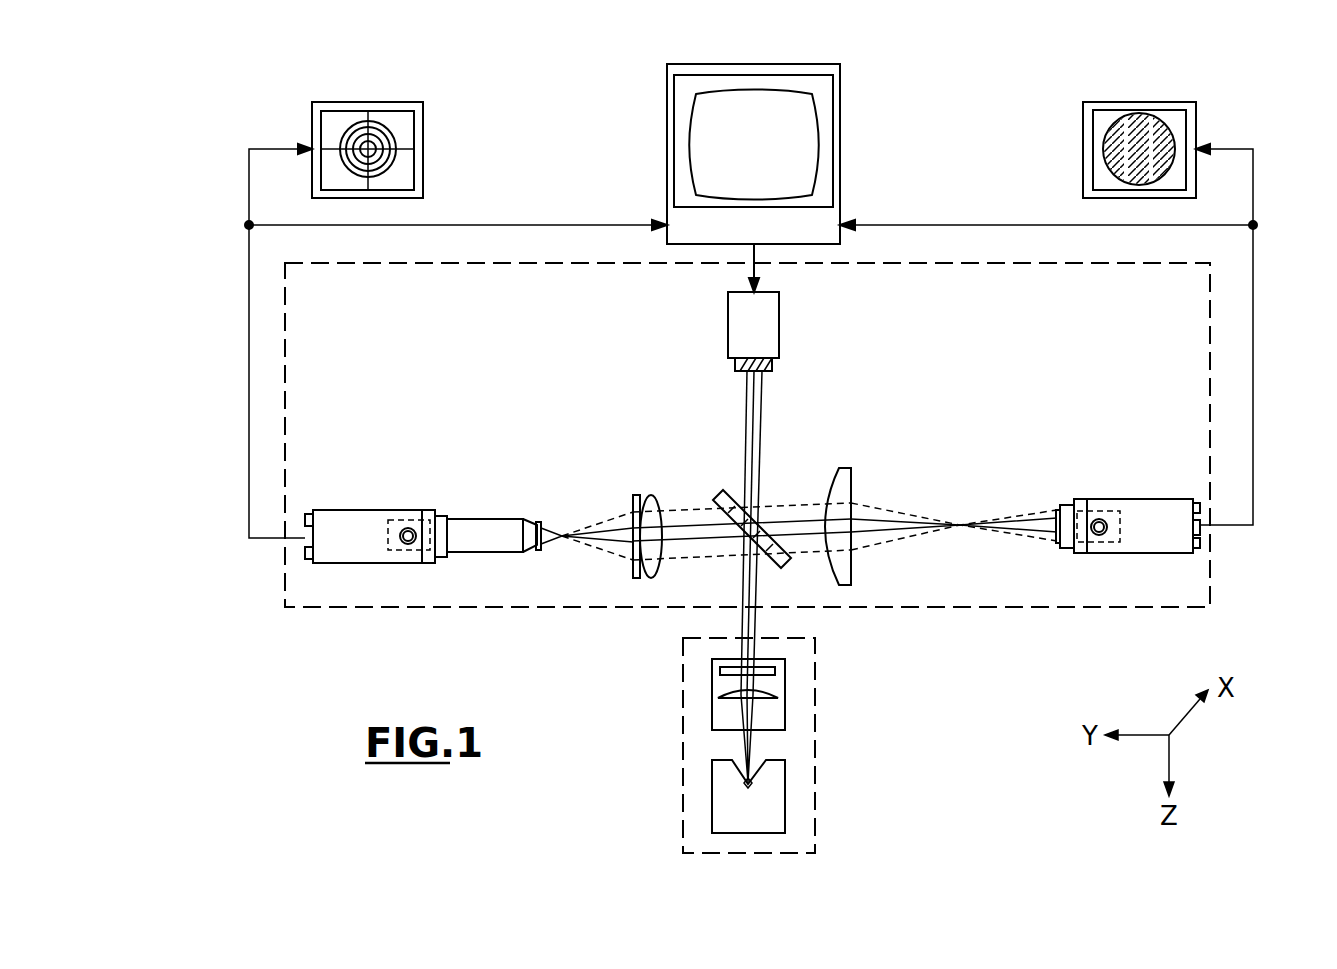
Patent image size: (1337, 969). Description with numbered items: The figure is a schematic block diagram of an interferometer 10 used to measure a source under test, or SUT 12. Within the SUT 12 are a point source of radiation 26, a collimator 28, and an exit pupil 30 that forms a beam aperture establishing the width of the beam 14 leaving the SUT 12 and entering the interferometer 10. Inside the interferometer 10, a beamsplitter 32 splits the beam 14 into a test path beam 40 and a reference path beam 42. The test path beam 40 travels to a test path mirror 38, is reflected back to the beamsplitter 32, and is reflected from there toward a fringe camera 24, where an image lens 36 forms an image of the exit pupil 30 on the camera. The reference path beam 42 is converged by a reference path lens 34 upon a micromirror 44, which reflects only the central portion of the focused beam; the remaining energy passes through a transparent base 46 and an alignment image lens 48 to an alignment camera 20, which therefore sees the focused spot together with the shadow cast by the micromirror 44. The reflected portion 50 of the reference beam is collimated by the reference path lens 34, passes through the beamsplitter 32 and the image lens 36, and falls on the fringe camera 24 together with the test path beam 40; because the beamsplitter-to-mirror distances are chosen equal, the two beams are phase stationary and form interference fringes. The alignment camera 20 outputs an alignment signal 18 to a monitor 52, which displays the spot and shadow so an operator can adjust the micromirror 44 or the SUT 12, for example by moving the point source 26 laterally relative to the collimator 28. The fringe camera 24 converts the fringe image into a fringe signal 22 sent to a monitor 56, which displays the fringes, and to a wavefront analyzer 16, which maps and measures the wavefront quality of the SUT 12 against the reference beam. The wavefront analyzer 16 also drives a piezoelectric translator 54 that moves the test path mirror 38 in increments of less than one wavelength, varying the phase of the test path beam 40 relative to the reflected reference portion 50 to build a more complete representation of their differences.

The interferometer 10 is at (578, 245).
The source under test 12 is at (643, 727).
The beam 14 is at (760, 629).
The wavefront analyzer 16 is at (756, 64).
The alignment signal 18 is at (247, 223).
The alignment camera 20 is at (383, 509).
The fringe signal 22 is at (1255, 224).
The fringe camera 24 is at (1103, 498).
The point source of radiation 26 is at (752, 785).
The collimator 28 is at (778, 698).
The exit pupil 30 is at (749, 668).
The beamsplitter 32 is at (721, 488).
The reference path lens 34 is at (648, 494).
The image lens 36 is at (852, 472).
The test path mirror 38 is at (772, 371).
The test path beam 40 is at (762, 434).
The reference path beam 42 is at (713, 536).
The micromirror 44 is at (553, 548).
The transparent base 46 is at (538, 521).
The alignment image lens 48 is at (478, 518).
The reflected reference beam portion 50 is at (607, 518).
The monitor 52 is at (368, 102).
The piezoelectric translator 54 is at (780, 323).
The monitor 56 is at (1158, 102).